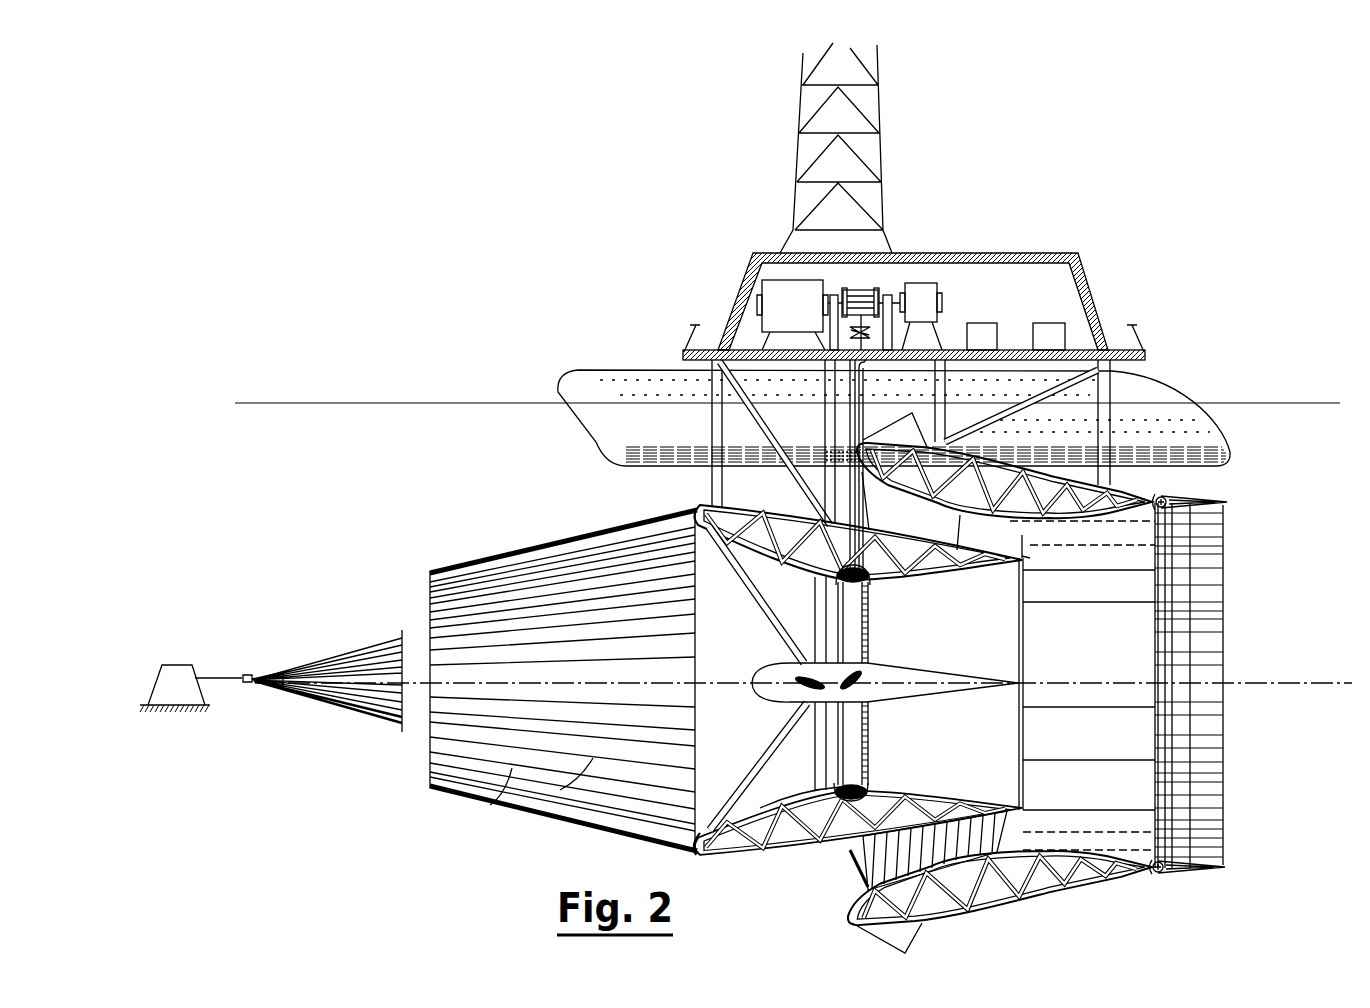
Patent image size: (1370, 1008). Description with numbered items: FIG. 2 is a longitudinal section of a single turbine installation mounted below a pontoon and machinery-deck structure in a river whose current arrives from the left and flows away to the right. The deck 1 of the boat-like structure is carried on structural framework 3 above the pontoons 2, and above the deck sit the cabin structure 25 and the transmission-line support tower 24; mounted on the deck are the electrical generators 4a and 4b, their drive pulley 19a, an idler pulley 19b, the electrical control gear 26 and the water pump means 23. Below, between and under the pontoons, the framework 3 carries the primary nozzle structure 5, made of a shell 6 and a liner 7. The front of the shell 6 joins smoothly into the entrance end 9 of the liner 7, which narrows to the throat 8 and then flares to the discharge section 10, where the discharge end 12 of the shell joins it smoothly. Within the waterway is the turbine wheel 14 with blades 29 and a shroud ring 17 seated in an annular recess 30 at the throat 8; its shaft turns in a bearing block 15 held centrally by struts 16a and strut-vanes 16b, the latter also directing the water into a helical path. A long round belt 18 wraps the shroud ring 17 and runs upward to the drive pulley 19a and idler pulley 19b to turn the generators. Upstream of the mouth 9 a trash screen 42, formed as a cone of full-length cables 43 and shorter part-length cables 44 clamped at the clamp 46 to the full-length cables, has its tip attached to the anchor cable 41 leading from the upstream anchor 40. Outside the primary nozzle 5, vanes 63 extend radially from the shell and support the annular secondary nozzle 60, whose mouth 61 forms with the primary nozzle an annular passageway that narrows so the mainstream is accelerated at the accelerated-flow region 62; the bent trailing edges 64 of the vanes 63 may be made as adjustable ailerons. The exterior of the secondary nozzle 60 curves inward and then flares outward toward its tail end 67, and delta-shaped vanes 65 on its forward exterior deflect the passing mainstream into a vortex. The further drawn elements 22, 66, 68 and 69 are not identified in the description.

The deck 1 is at (742, 352).
The pontoons 2 is at (632, 370).
The structural framework 3 is at (770, 447).
The electrical generator 4a is at (818, 281).
The electrical generator 4b is at (938, 300).
The primary nozzle structure 5 is at (660, 509).
The shell 6 is at (911, 433).
The liner 7 is at (805, 788).
The throat 8 is at (837, 683).
The entrance end 9 is at (698, 858).
The discharge section 10 is at (1022, 575).
The discharge end 12 is at (1025, 555).
The turbine wheel 14 is at (873, 662).
The bearing block 15 is at (754, 686).
The struts 16a is at (752, 610).
The strut-vanes 16b is at (818, 628).
The shroud ring 17 is at (810, 516).
The belt 18 is at (860, 465).
The drive pulley 19a is at (885, 278).
The idler pulley 19b is at (850, 350).
The duct lower wall truss 22 is at (857, 823).
The water pump means 23 is at (993, 348).
The transmission-line support tower 24 is at (795, 175).
The cabin structure 25 is at (1075, 253).
The electrical control gear 26 is at (1059, 348).
The blades 29 is at (836, 604).
The annular recess 30 is at (870, 582).
The anchor 40 is at (178, 665).
The anchor cable 41 is at (218, 677).
The trash screen 42 is at (536, 712).
The full-length cables 43 is at (478, 808).
The part-length cables 44 is at (540, 815).
The clamp 46 is at (410, 597).
The secondary nozzle 60 is at (988, 457).
The mouth 61 is at (860, 506).
The accelerated-flow region 62 is at (1051, 554).
The vanes 63 is at (880, 505).
The trailing edge 64 is at (996, 531).
The delta-shaped vanes 65 is at (912, 415).
The flap hinge 66 is at (1180, 500).
The tail end 67 is at (1055, 893).
The duct lower wall skin 68 is at (790, 850).
The flap hinge 69 is at (1155, 875).